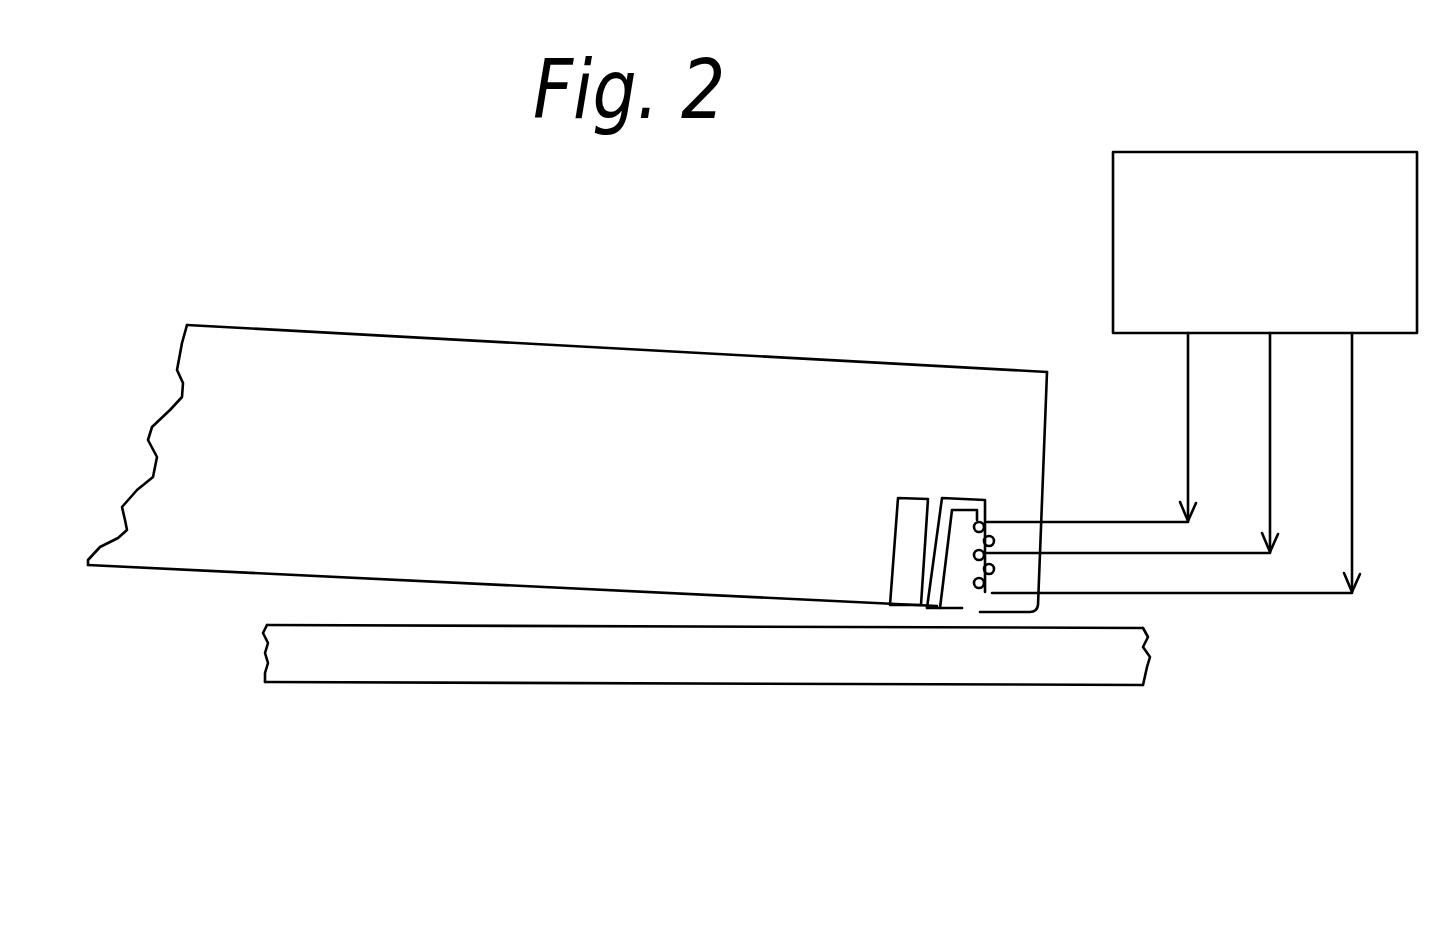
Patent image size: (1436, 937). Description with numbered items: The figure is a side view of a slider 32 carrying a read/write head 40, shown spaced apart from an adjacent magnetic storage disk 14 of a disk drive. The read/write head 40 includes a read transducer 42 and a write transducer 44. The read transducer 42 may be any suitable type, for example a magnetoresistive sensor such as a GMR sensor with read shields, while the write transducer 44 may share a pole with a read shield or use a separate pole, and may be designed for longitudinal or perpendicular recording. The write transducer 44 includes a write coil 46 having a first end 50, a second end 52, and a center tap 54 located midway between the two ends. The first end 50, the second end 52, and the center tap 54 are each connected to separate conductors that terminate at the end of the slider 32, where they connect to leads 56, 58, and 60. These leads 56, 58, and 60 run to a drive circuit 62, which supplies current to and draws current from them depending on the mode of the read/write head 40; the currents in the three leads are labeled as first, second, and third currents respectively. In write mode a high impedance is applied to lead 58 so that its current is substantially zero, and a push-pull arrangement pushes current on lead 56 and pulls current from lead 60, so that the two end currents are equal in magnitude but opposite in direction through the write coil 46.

The substrate plate 14 is at (625, 671).
The slider 32 is at (605, 318).
The read/write head 40 is at (932, 462).
The read transducer 42 is at (892, 557).
The write transducer 44 is at (990, 496).
The write coil 46 is at (968, 558).
The first end 50 is at (988, 520).
The second end 52 is at (979, 591).
The center tap 54 is at (990, 556).
The lead 56 is at (1190, 440).
The lead 58 is at (1272, 453).
The lead 60 is at (1353, 508).
The drive circuit 62 is at (1308, 270).